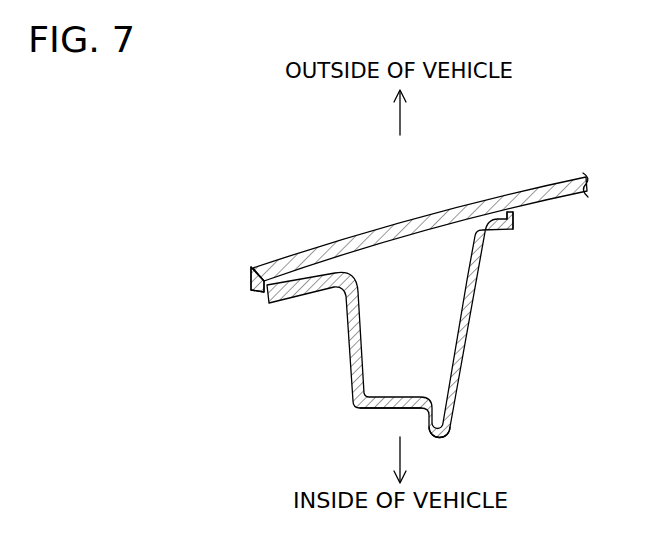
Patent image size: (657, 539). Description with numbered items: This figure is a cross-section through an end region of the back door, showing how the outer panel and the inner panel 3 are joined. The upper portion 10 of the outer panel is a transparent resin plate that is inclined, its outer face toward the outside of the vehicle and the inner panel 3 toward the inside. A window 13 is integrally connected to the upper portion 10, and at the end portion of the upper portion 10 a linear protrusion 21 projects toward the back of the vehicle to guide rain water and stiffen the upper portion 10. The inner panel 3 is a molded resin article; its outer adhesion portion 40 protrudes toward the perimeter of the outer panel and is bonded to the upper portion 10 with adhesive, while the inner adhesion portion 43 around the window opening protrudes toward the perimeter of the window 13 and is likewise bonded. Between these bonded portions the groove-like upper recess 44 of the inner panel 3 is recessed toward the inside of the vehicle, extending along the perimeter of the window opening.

The upper portion 10 is at (395, 228).
The window 13 is at (526, 189).
The linear protrusion 21 is at (254, 265).
The outer adhesion portion 40 is at (265, 297).
The inner adhesion portion 43 is at (513, 214).
The upper recess 44 is at (399, 396).
The inner panel 3 is at (374, 410).